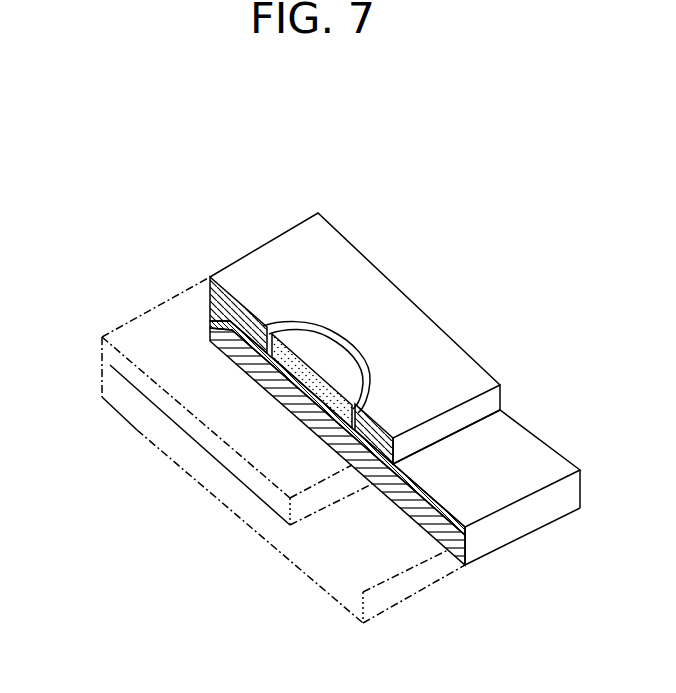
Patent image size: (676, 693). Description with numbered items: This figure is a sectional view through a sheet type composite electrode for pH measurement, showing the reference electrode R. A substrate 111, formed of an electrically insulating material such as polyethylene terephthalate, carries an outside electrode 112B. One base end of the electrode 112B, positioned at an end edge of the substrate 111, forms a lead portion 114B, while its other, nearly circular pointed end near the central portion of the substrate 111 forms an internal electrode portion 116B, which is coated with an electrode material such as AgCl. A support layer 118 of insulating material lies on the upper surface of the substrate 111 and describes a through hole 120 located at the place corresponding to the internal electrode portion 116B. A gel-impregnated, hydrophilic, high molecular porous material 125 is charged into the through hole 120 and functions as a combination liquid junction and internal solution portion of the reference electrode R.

The substrate 111 is at (402, 500).
The electrode 112B is at (352, 451).
The internal electrode portion 116B is at (207, 430).
The support layer 118 is at (210, 337).
The through hole 120 is at (357, 343).
The lead portion 114B is at (442, 500).
The gel-impregnated, hydrophilic, high molecular porous material 125 is at (330, 355).
The reference electrode R is at (410, 238).